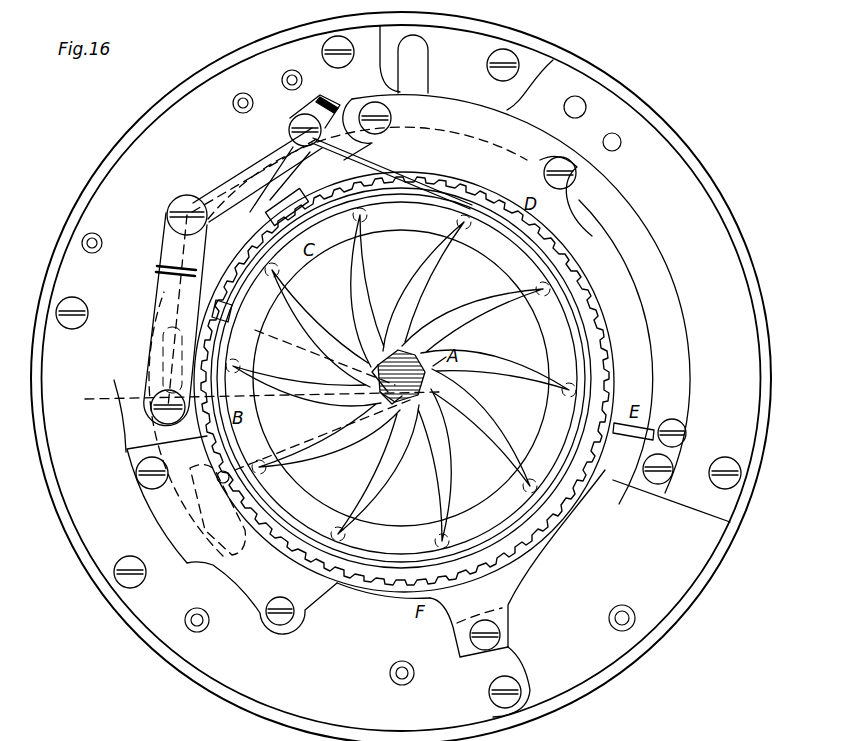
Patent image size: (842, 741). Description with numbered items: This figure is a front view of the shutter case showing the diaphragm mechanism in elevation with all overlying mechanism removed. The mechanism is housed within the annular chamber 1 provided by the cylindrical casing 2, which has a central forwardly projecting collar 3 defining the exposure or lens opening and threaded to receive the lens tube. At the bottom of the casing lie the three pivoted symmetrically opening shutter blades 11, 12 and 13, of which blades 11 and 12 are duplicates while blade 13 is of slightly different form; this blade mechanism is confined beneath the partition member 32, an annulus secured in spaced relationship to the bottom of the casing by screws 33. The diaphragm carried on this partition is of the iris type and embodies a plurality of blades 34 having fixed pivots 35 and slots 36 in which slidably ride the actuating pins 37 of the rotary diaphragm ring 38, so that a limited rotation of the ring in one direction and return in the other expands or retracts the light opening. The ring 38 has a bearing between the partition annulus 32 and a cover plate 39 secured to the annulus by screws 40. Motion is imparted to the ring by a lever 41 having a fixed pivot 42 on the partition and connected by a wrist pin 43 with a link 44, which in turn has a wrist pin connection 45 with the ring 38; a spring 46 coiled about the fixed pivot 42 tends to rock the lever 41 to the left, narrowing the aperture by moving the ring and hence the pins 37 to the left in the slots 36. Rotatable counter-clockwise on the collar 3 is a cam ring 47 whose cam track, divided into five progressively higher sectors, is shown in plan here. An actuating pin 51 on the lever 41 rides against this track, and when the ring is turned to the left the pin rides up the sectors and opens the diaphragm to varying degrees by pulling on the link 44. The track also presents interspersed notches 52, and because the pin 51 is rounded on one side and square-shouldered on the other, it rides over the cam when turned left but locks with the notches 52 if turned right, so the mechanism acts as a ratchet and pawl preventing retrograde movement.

The annular chamber 1 is at (688, 580).
The cylindrical casing 2 is at (680, 626).
The central forwardly projecting collar 3 is at (466, 546).
The shutter blade 11 is at (406, 350).
The shutter blade 12 is at (372, 370).
The shutter blade 13 is at (378, 396).
The partition member 32 is at (105, 560).
The screws 33 is at (82, 311).
The diaphragm blades 34 is at (492, 357).
The fixed pivots 35 is at (358, 540).
The slots 36 is at (290, 399).
The actuating pins 37 is at (194, 585).
The rotary diaphragm ring 38 is at (150, 372).
The cover plate 39 is at (160, 505).
The screws 40 is at (140, 477).
The lever 41 is at (246, 198).
The fixed pivot 42 is at (316, 117).
The wrist pin 43 is at (168, 211).
The link 44 is at (172, 318).
The wrist pin connection 45 is at (152, 408).
The spring 46 is at (382, 177).
The cam ring 47 is at (385, 590).
The actuating pin 51 is at (318, 225).
The notches 52 is at (228, 308).